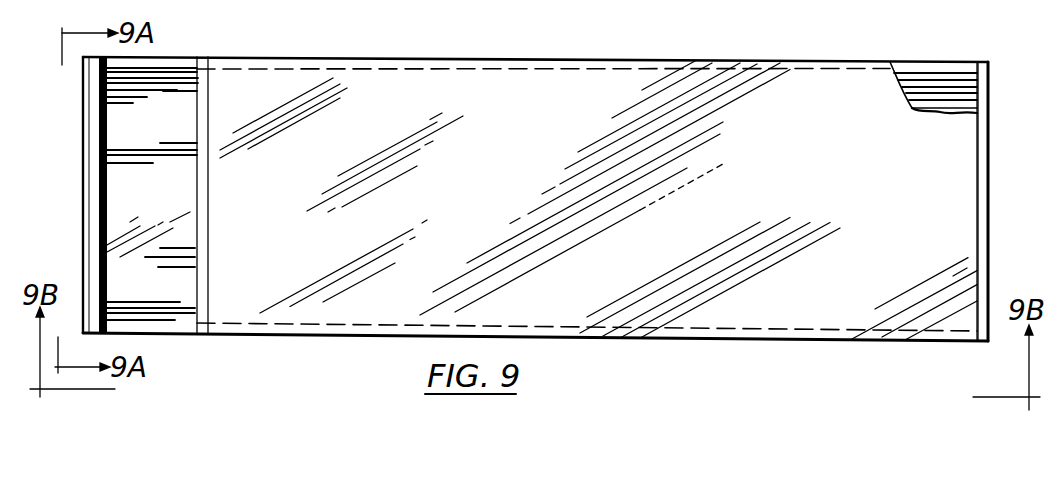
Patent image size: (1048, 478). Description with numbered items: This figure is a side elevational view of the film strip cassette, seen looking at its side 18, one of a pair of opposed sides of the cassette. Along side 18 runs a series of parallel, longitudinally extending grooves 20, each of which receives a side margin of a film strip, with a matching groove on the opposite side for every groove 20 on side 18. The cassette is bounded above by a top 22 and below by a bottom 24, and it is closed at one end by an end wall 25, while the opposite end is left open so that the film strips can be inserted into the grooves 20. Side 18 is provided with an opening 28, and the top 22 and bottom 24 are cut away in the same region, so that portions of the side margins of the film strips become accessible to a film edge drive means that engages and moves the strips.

The side 18 is at (535, 199).
The grooves 20 is at (185, 93).
The top 22 is at (383, 63).
The bottom 24 is at (765, 337).
The end wall 25 is at (989, 187).
The opening 28 is at (186, 205).